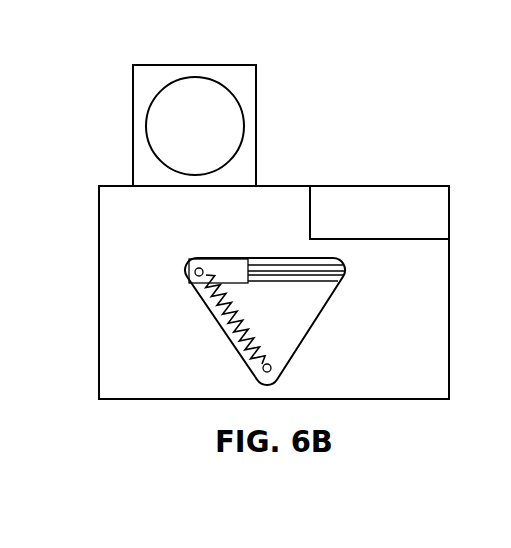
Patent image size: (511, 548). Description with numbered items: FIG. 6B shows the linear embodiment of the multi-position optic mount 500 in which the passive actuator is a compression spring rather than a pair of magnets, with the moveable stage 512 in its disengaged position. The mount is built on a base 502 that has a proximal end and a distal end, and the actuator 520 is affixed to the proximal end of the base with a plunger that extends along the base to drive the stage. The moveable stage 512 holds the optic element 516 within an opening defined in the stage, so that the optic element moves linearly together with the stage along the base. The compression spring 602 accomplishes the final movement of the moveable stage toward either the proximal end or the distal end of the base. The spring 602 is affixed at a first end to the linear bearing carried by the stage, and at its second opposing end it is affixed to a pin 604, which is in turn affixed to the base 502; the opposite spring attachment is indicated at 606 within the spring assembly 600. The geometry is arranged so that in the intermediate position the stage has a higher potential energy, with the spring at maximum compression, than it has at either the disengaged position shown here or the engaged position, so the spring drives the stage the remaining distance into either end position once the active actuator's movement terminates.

The bushing assembly 500 is at (344, 116).
The base 502 is at (152, 401).
The moveable stage 512 is at (232, 65).
The optic element 516 is at (192, 92).
The actuator 520 is at (370, 213).
The wedge member 600 is at (330, 312).
The spring 602 is at (210, 312).
The pin 604 is at (263, 374).
The upper pivot pin 606 is at (200, 266).